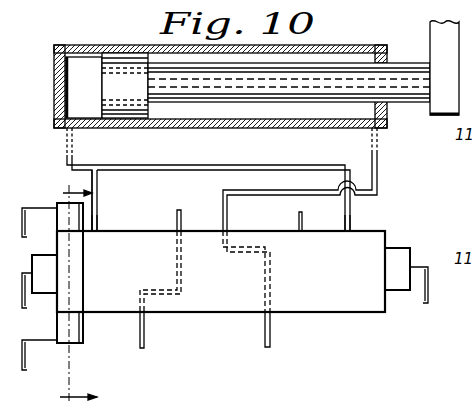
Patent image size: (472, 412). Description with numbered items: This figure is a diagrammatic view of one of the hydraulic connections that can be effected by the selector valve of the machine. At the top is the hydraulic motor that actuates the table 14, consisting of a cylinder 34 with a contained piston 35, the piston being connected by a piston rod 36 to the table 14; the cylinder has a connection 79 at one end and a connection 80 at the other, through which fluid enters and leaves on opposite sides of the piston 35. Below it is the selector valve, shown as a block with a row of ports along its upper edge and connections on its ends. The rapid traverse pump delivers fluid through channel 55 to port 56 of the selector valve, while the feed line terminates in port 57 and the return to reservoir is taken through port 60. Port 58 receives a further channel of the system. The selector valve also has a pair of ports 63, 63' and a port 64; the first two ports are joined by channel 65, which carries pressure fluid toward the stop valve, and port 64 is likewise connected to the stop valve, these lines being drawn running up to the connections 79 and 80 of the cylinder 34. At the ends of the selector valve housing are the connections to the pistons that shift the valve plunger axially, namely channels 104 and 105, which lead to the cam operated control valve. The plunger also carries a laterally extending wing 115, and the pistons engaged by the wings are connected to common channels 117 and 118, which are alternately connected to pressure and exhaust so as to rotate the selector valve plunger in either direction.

The cylinder 34 is at (78, 47).
The piston 35 is at (113, 75).
The piston rod 36 is at (395, 78).
The cylinder port 79 is at (72, 135).
The cylinder port 80 is at (377, 131).
The wing 115 is at (461, 191).
The channel 117 is at (53, 197).
The table 14 is at (83, 290).
The channel 65 is at (99, 207).
The port 63 is at (112, 220).
The channel 55 is at (182, 211).
The port 56 is at (182, 231).
The port 64 is at (227, 231).
The port 58 is at (302, 230).
The port 63' is at (373, 220).
The port 60 is at (144, 316).
The port 57 is at (270, 314).
The channel 104 is at (42, 302).
The channel 118 is at (27, 364).
The channel 105 is at (423, 297).